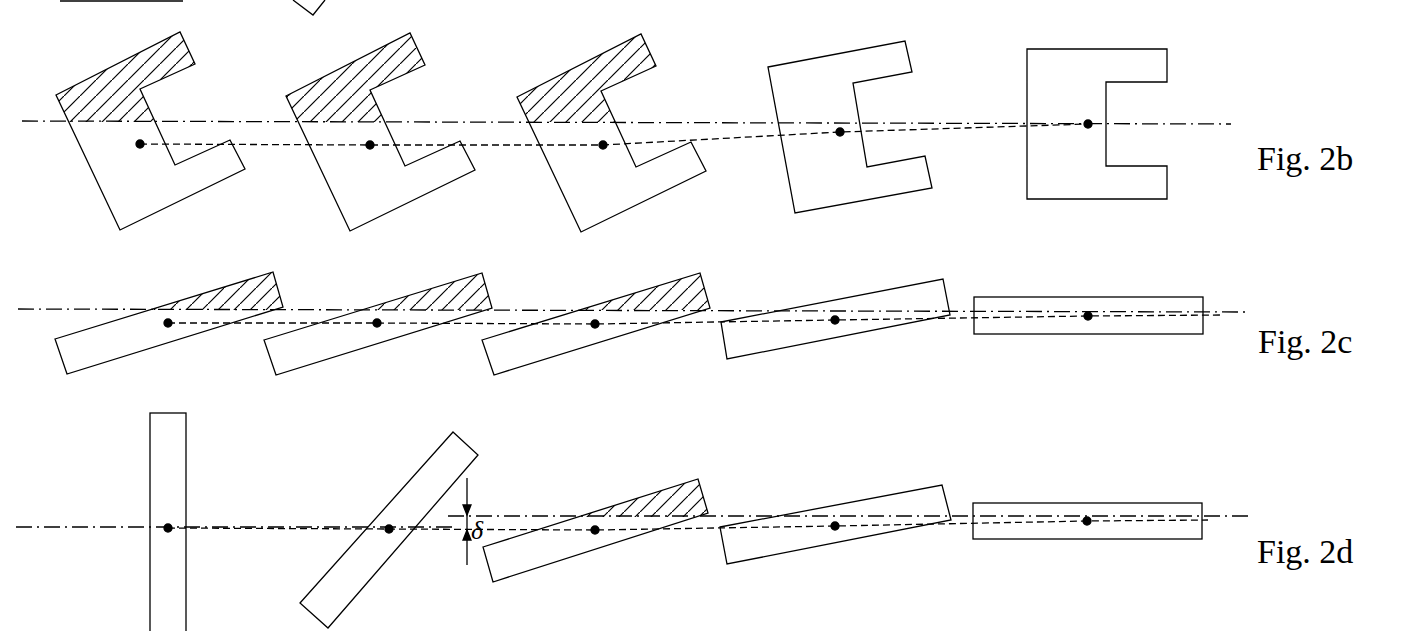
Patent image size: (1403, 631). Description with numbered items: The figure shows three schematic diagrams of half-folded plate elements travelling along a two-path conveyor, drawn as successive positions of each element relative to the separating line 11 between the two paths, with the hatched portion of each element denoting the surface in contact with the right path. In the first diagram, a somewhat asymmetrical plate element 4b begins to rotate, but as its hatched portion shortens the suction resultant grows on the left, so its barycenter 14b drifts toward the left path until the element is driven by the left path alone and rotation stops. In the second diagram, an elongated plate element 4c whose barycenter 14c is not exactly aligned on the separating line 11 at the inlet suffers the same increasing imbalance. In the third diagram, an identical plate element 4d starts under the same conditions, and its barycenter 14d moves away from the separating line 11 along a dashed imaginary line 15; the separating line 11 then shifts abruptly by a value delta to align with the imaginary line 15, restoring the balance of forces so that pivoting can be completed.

In FIG. 2B, the plate element 4b is at (1133, 63).
In FIG. 2C, the plate element 4c is at (1175, 307).
In FIG. 2D, the plate element 4d is at (1168, 513).
In FIG. 2B, the separating line 11 is at (1212, 123).
In FIG. 2C, the separating line 11 is at (1226, 312).
In FIG. 2D, the separating line 11 is at (263, 526).
In FIG. 2B, the barycenter 14b is at (1088, 130).
In FIG. 2C, the barycenter 14c is at (1088, 320).
In FIG. 2D, the barycenter 14d is at (1088, 528).
In FIG. 2D, the dashed imaginary line 15 is at (703, 530).